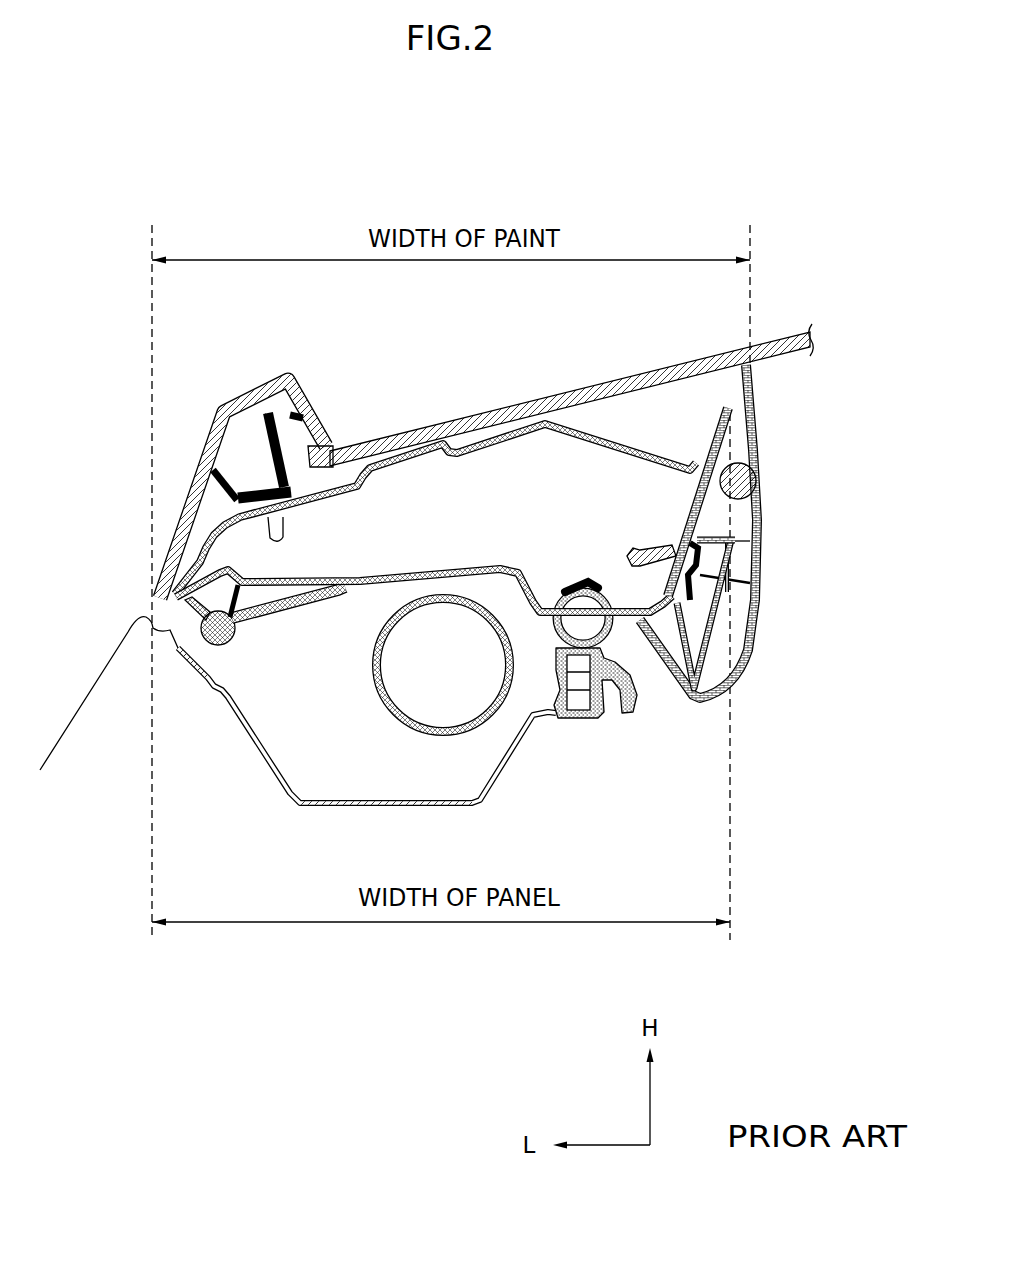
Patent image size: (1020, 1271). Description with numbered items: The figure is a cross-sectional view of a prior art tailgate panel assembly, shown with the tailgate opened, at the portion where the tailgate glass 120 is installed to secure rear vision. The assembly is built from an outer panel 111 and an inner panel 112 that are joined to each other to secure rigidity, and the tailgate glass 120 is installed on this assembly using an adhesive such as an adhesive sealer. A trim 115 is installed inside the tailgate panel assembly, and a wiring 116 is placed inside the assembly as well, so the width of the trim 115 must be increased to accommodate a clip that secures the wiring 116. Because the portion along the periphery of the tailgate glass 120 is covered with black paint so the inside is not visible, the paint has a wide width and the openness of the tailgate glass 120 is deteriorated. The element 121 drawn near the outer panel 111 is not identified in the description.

The tailgate glass 120 is at (668, 367).
The bracket clip 121 is at (247, 393).
The outer panel 111 is at (608, 437).
The inner panel 112 is at (470, 568).
The trim 115 is at (752, 650).
The wiring 116 is at (740, 482).